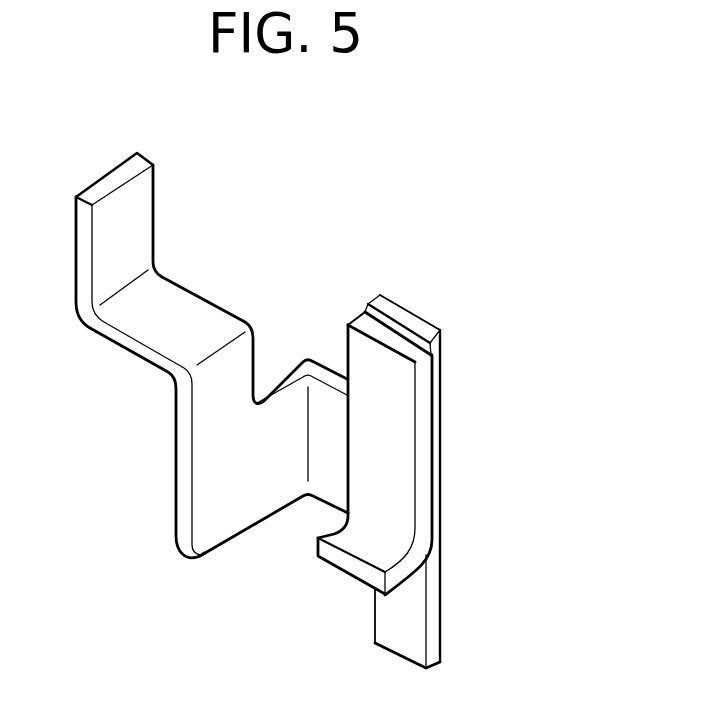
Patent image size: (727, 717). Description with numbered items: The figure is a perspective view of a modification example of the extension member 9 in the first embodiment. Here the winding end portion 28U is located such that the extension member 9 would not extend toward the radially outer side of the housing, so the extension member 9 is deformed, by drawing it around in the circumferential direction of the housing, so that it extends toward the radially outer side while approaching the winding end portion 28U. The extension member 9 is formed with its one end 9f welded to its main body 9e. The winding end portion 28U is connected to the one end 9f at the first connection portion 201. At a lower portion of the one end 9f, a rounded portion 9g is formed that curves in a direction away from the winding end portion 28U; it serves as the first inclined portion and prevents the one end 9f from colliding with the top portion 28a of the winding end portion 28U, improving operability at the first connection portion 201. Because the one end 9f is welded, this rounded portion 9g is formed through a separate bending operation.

The extension member 9 is at (175, 448).
The main body 9e is at (250, 530).
The one end 9f is at (432, 477).
The rounded portion 9g is at (432, 555).
The first connection portion 201 is at (432, 407).
The top portion 28a is at (407, 322).
The winding end portion 28U is at (440, 523).